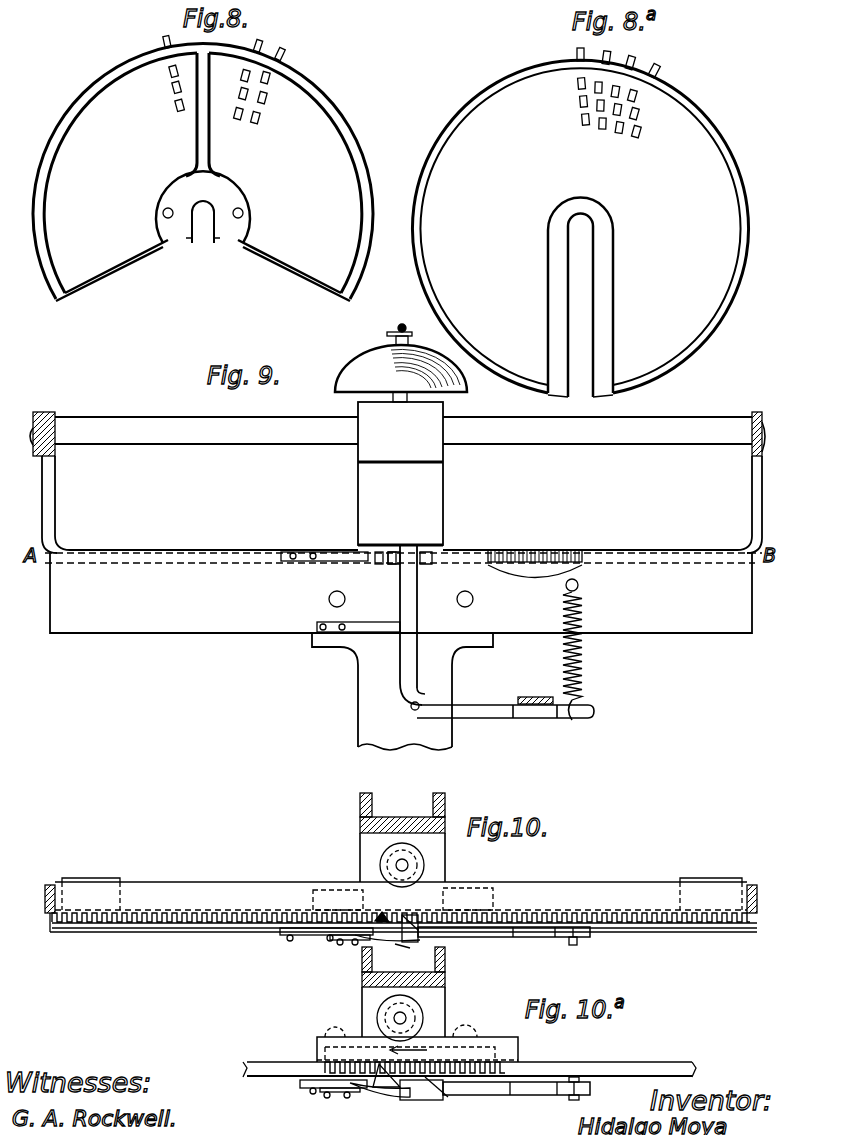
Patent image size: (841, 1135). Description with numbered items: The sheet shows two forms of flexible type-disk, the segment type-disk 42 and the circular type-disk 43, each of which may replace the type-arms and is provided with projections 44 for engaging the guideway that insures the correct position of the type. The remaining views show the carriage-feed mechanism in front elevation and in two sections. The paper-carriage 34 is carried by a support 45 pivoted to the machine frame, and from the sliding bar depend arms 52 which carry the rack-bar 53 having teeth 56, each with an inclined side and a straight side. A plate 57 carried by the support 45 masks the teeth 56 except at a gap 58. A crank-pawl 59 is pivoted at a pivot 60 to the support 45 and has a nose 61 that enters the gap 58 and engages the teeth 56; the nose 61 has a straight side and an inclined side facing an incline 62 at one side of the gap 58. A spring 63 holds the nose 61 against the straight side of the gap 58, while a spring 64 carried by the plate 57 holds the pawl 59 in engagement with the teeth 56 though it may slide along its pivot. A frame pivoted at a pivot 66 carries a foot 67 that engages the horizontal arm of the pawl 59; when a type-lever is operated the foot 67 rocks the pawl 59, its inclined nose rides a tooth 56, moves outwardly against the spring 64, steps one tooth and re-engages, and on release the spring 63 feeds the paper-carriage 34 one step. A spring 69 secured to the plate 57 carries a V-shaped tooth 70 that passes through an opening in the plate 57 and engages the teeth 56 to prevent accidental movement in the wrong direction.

In FIG. 8, the type-disk 42 is at (203, 172).
In FIG. 8A, the type-disk 43 is at (581, 228).
In FIG. 8, the projections 44 is at (261, 47).
In FIG. 8A, the projections 44 is at (660, 66).
In FIG. 9, the support 45 is at (346, 698).
In FIG. 10, the support 45 is at (416, 840).
In FIG. 10A, the support 45 is at (403, 994).
In FIG. 9, the paper-carriage 34 is at (764, 450).
In FIG. 9, the arms 52 is at (47, 485).
In FIG. 10, the rack-bar 53 is at (565, 890).
In FIG. 10A, the rack-bar 53 is at (443, 1041).
In FIG. 9, the teeth 56 is at (535, 545).
In FIG. 10, the teeth 56 is at (215, 913).
In FIG. 9, the plate 57 is at (401, 593).
In FIG. 10, the plate 57 is at (600, 928).
In FIG. 9, the gap 58 is at (423, 555).
In FIG. 10, the gap 58 is at (422, 913).
In FIG. 9, the crank-pawl 59 is at (462, 712).
In FIG. 10, the crank-pawl 59 is at (473, 937).
In FIG. 10A, the crank-pawl 59 is at (492, 1086).
In FIG. 9, the pivot 60 is at (413, 709).
In FIG. 9, the nose 61 is at (392, 548).
In FIG. 10, the nose 61 is at (395, 915).
In FIG. 10A, the nose 61 is at (440, 1097).
In FIG. 9, the incline 62 is at (433, 557).
In FIG. 10, the incline 62 is at (430, 920).
In FIG. 9, the spring 63 is at (590, 612).
In FIG. 9, the spring 64 is at (380, 632).
In FIG. 10A, the spring 64 is at (400, 1097).
In FIG. 10, the pivot 66 is at (412, 948).
In FIG. 9, the foot 67 is at (538, 697).
In FIG. 9, the spring 69 is at (332, 562).
In FIG. 10, the spring 69 is at (315, 936).
In FIG. 10A, the spring 69 is at (312, 1090).
In FIG. 9, the V-shaped tooth 70 is at (380, 565).
In FIG. 10, the V-shaped tooth 70 is at (368, 942).
In FIG. 10A, the V-shaped tooth 70 is at (340, 1090).